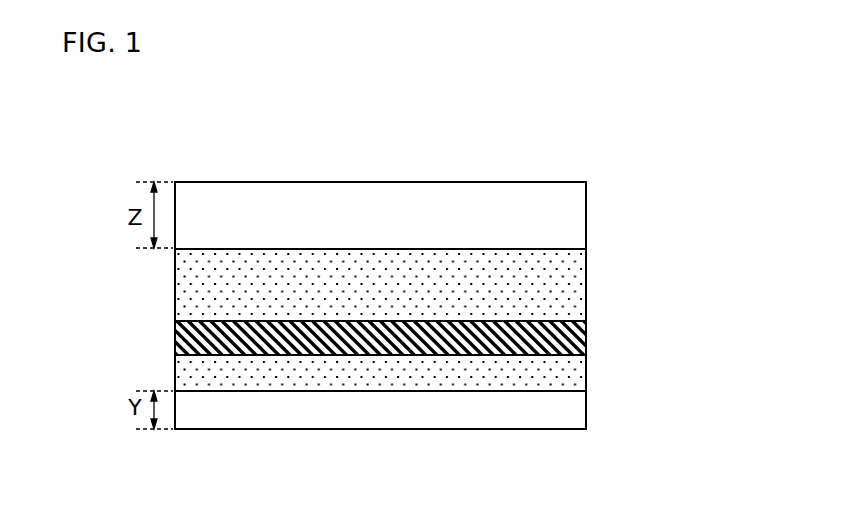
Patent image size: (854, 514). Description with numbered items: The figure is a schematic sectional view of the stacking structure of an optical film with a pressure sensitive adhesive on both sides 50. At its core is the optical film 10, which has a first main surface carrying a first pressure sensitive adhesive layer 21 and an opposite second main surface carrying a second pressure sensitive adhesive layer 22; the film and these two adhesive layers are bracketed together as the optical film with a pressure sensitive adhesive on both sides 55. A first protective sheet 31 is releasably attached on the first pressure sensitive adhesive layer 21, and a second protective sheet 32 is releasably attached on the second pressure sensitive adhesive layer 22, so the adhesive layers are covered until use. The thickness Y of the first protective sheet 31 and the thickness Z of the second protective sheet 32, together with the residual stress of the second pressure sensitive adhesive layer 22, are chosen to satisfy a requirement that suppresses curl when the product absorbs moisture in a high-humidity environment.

The optical film with a pressure sensitive adhesive on both sides 50 is at (554, 162).
The second protective sheet 32 is at (377, 192).
The first protective sheet 31 is at (392, 415).
The second pressure sensitive adhesive layer 22 is at (577, 280).
The first pressure sensitive adhesive layer 21 is at (577, 368).
The optical film 10 is at (579, 328).
The optical film with a pressure sensitive adhesive on both sides 55 is at (688, 272).